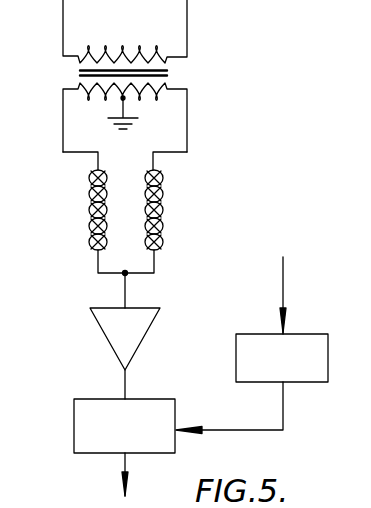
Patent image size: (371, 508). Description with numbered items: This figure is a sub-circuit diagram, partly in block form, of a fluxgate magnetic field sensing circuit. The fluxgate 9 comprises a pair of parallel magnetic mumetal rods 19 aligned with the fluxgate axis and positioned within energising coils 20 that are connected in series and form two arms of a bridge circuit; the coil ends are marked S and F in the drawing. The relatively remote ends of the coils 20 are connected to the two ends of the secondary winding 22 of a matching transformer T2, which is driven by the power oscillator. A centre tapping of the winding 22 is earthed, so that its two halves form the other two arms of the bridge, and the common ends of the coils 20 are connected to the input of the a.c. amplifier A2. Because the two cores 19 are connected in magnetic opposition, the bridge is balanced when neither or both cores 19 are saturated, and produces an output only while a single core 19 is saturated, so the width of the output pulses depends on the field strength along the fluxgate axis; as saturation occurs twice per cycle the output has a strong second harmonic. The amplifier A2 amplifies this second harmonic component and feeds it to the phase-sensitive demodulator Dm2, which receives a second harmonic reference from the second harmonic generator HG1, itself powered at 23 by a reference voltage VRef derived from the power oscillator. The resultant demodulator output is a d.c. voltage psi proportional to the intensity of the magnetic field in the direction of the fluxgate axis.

The matching transformer T2 is at (170, 73).
The secondary winding 22 is at (142, 97).
The fluxgate 9 is at (124, 212).
The energising coils 20 is at (124, 212).
The magnetic mumetal rods 19 is at (173, 192).
The coil terminals S is at (125, 168).
The coil terminals F is at (123, 256).
The a.c. amplifier A2 is at (105, 327).
The phase-sensitive demodulator Dm2 is at (82, 437).
The second harmonic generator HG1 is at (240, 357).
The power input of second harmonic generator 23 is at (285, 290).
The reference voltage VRef is at (306, 261).
The d.c. output voltage psi is at (138, 484).